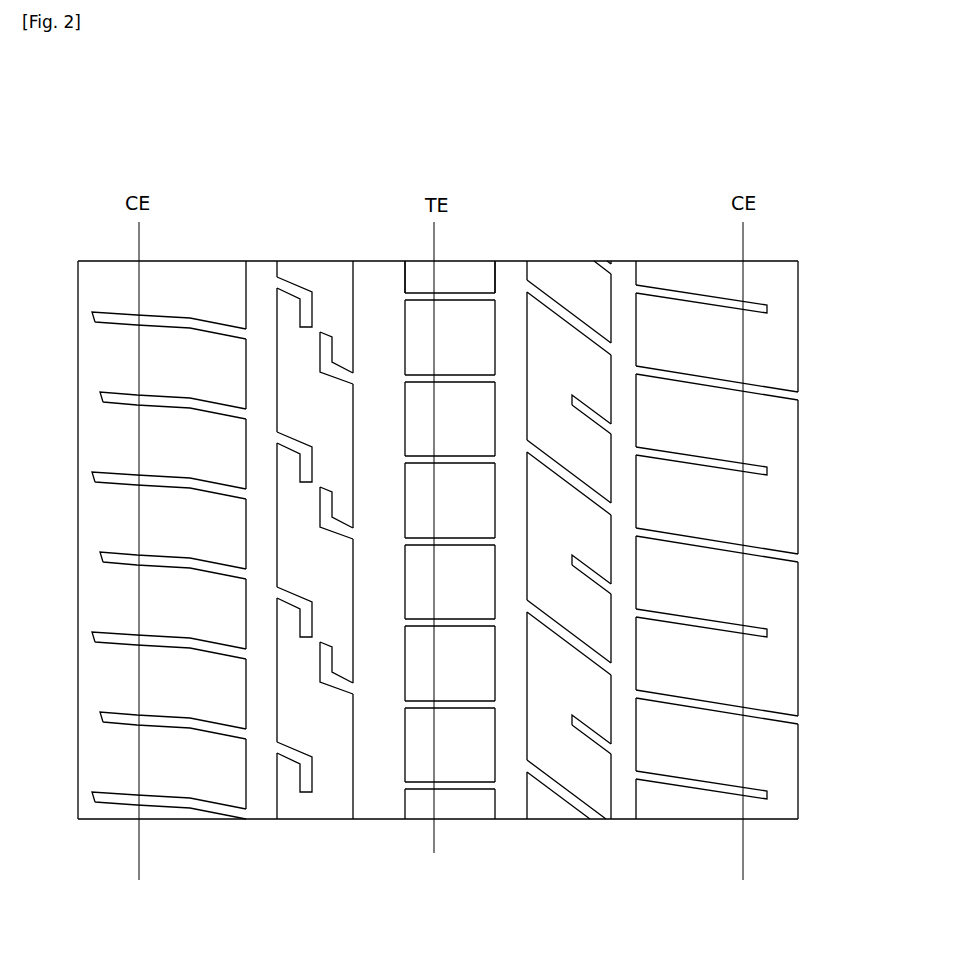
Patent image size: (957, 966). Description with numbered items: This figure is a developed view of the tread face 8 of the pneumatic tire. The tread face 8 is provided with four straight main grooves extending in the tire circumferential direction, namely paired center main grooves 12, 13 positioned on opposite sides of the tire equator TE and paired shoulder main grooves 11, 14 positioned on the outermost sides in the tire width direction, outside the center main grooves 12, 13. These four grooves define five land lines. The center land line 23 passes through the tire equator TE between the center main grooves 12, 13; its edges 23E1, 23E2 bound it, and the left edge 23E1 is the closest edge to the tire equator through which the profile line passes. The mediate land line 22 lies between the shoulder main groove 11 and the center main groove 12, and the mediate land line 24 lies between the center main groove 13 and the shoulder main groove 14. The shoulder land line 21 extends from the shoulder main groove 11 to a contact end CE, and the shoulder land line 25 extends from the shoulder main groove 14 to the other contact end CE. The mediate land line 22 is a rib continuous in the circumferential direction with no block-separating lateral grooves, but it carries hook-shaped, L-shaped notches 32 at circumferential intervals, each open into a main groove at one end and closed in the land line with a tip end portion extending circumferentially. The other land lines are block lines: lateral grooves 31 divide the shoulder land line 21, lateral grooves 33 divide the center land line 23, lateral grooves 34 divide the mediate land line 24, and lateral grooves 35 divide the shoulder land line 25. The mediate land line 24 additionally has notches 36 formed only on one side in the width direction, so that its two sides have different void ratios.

The tread face 8 is at (107, 822).
The shoulder main groove 11 is at (263, 260).
The center main groove 12 is at (375, 260).
The center main groove 13 is at (513, 261).
The shoulder main groove 14 is at (626, 261).
The shoulder land line 21 is at (169, 603).
The mediate land line 22 is at (315, 588).
The center land line 23 is at (441, 603).
The mediate land line 24 is at (569, 580).
The shoulder land line 25 is at (717, 592).
The edge of the center land line 23E1 is at (403, 770).
The edge of the center land line 23E2 is at (495, 768).
The lateral groove 31 is at (195, 558).
The notch 32 is at (300, 430).
The lateral groove 33 is at (472, 537).
The lateral groove 34 is at (556, 455).
The lateral groove 35 is at (700, 532).
The notch 36 is at (585, 562).